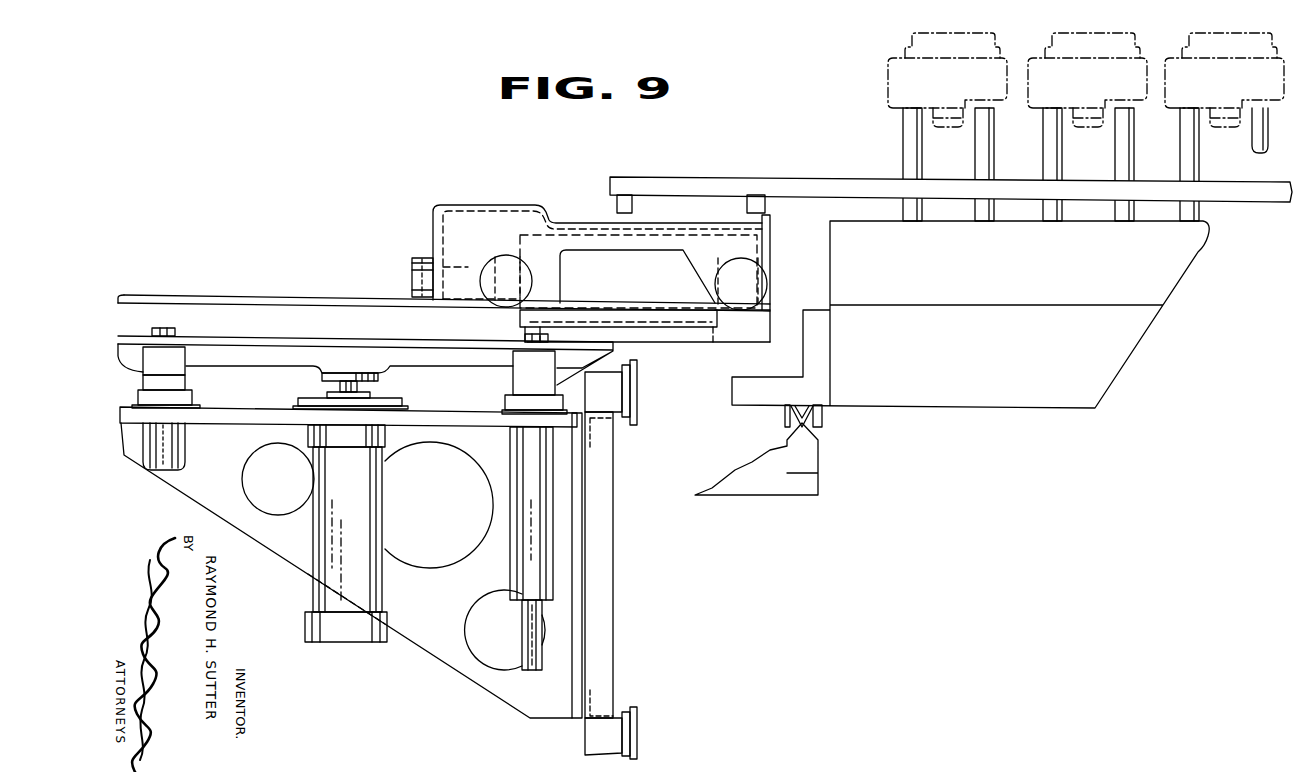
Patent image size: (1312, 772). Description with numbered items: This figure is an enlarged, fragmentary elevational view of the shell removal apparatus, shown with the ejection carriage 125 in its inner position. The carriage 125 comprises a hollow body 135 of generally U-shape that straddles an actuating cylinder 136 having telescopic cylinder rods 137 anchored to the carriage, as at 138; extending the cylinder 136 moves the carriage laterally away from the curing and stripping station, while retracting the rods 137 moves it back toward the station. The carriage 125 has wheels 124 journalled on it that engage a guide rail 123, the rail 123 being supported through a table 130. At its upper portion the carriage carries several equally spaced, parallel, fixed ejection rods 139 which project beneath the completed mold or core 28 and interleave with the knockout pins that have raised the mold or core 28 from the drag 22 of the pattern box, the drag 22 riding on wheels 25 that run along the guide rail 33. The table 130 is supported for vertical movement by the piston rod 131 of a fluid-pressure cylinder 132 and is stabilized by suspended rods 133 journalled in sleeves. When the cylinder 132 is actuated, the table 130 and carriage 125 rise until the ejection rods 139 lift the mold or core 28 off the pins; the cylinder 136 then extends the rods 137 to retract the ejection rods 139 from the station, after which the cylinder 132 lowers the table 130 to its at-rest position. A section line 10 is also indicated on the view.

The section line 10 is at (287, 362).
The drag 22 is at (1160, 297).
The wheels 25 is at (822, 420).
The mold or core 28 is at (901, 80).
The guide rail 33 is at (808, 460).
The guide rails 123 is at (366, 313).
The wheels 124 is at (535, 291).
The ejection carriage 125 is at (442, 203).
The table 130 is at (487, 362).
The piston rod 131 is at (372, 387).
The fluid-pressure actuated cylinder 132 is at (372, 506).
The suspended rods 133 is at (523, 672).
The hollow body 135 is at (505, 206).
The actuating cylinder 136 is at (548, 243).
The telescopic cylinder rods 137 is at (510, 257).
The anchor 138 is at (411, 263).
The ejection rods 139 is at (806, 182).